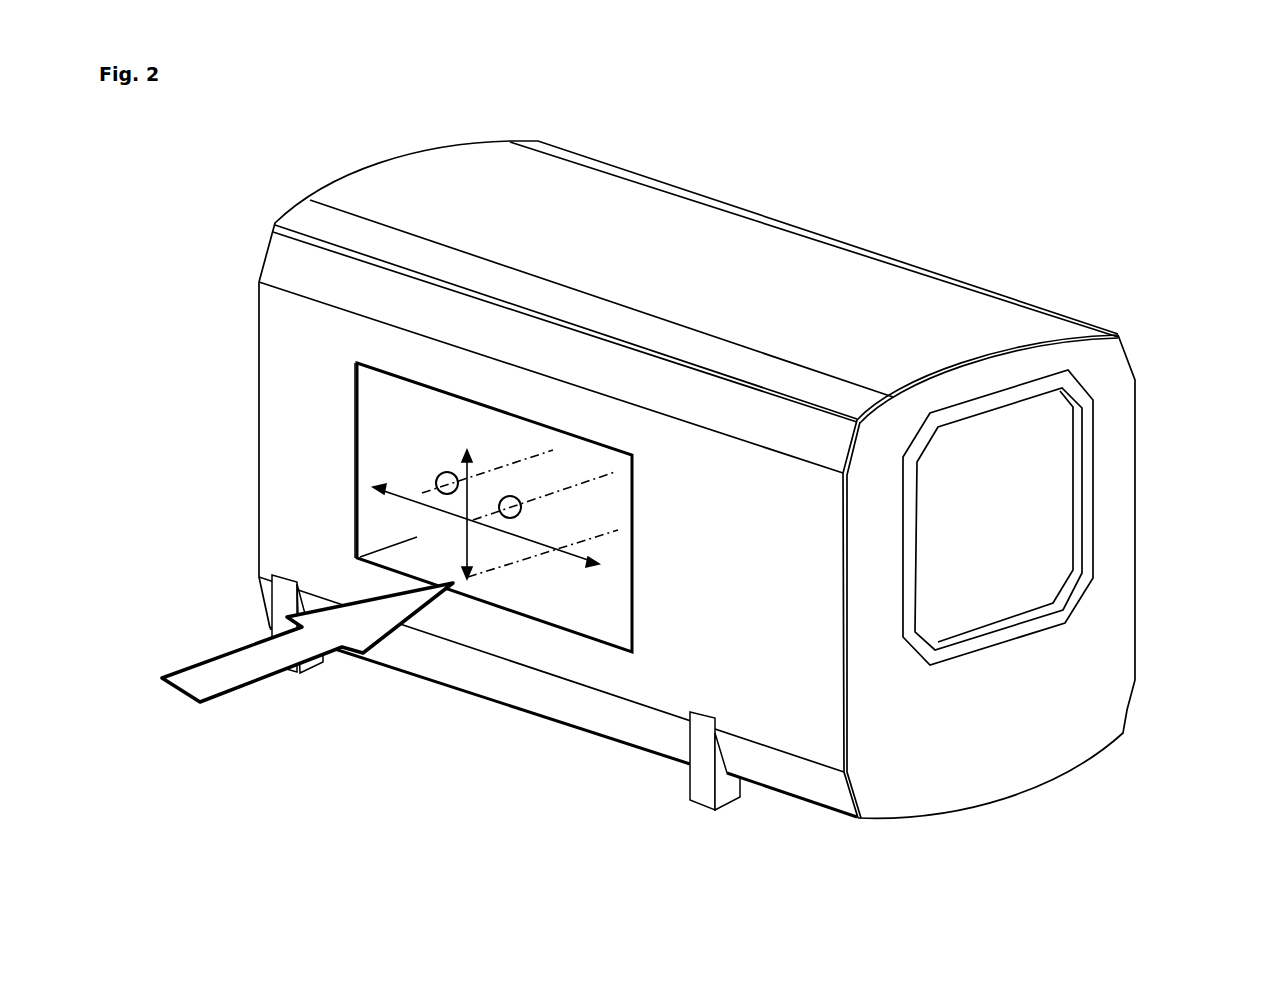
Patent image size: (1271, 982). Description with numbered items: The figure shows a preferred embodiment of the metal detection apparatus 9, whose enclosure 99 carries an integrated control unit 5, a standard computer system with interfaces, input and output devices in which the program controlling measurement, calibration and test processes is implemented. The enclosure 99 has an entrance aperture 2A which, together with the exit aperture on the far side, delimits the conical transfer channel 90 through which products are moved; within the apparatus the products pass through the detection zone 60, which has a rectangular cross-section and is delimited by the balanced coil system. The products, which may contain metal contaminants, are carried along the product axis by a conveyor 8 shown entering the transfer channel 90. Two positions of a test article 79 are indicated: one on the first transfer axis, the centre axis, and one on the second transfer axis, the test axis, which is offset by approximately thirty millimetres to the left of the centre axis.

The metal detection apparatus 9 is at (687, 474).
The enclosure 99 is at (693, 637).
The control unit 5 is at (1035, 535).
The entrance aperture 2A is at (493, 588).
The transfer channel 90 is at (493, 588).
The detection zone 60 is at (493, 588).
The test article 79 is at (473, 486).
The conveyor 8 is at (185, 685).